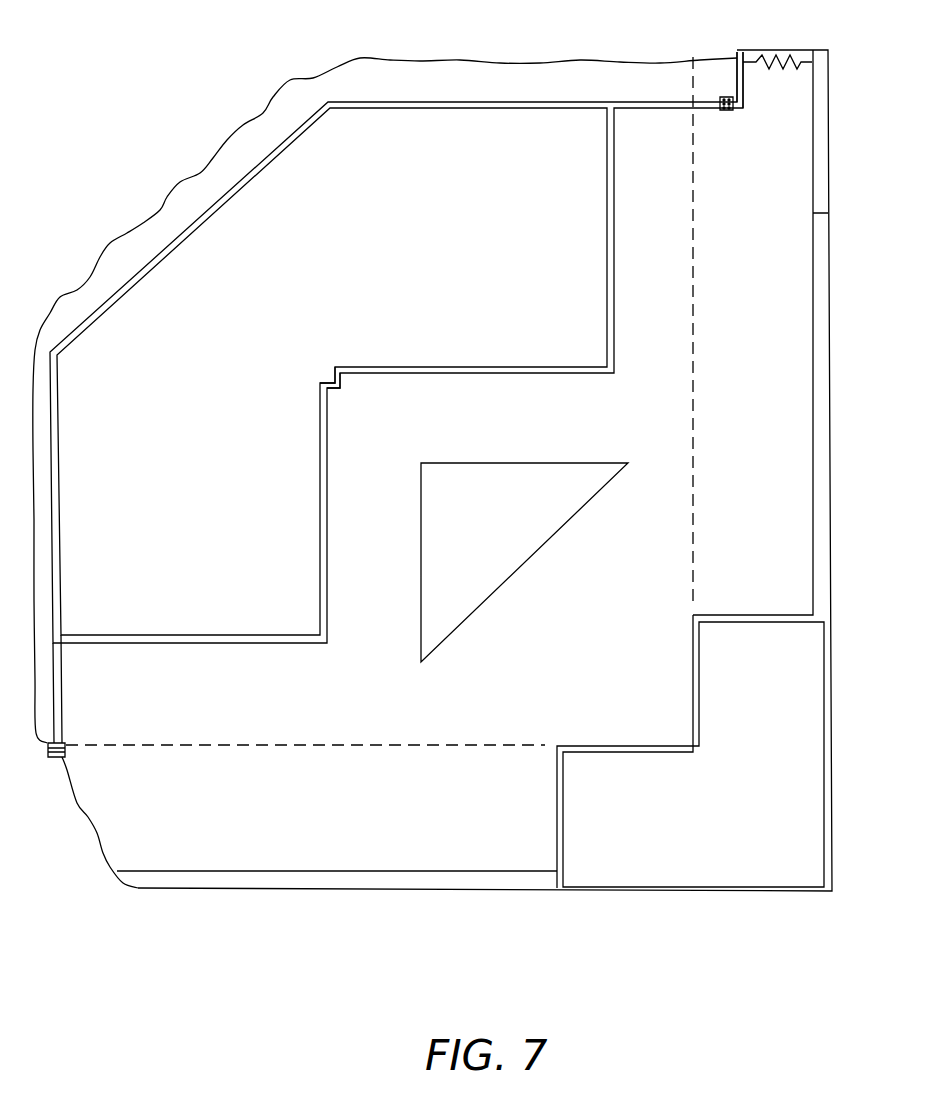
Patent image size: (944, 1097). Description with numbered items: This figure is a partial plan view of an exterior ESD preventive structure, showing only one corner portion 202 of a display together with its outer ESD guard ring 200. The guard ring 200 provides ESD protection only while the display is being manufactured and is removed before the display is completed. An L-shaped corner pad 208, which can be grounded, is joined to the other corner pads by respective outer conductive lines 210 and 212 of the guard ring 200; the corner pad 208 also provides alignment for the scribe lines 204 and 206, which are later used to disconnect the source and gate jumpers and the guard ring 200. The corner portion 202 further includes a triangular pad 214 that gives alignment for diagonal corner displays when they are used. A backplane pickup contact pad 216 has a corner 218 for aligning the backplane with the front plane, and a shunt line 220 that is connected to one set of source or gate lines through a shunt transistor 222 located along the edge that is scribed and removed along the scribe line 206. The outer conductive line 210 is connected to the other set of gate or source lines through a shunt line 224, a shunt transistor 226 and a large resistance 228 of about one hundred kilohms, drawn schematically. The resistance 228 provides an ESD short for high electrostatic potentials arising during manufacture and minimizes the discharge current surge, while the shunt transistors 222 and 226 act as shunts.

The outer ESD guard ring 200 is at (513, 893).
The corner portion 202 is at (499, 70).
The scribe line 204 is at (695, 427).
The scribe line 206 is at (346, 740).
The corner pad 208 is at (732, 823).
The outer conductive line 210 is at (813, 463).
The outer conductive line 212 is at (372, 870).
The triangular pad 214 is at (509, 534).
The backplane pickup contact pad 216 is at (438, 261).
The corner 218 is at (333, 388).
The shunt line 220 is at (57, 682).
The shunt transistor 222 is at (67, 740).
The shunt line 224 is at (742, 87).
The shunt transistor 226 is at (717, 119).
The large resistance 228 is at (775, 55).